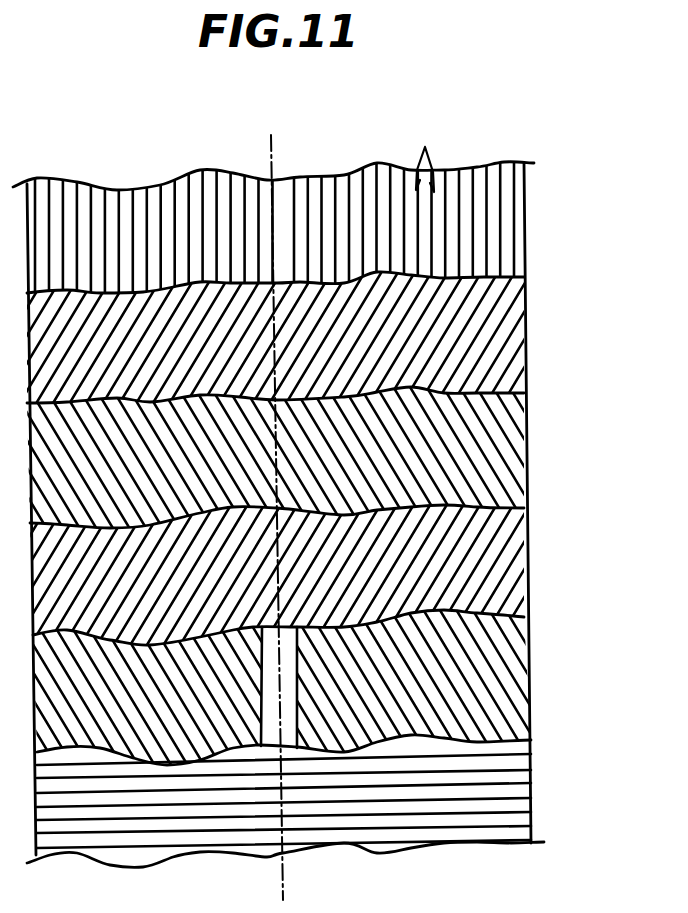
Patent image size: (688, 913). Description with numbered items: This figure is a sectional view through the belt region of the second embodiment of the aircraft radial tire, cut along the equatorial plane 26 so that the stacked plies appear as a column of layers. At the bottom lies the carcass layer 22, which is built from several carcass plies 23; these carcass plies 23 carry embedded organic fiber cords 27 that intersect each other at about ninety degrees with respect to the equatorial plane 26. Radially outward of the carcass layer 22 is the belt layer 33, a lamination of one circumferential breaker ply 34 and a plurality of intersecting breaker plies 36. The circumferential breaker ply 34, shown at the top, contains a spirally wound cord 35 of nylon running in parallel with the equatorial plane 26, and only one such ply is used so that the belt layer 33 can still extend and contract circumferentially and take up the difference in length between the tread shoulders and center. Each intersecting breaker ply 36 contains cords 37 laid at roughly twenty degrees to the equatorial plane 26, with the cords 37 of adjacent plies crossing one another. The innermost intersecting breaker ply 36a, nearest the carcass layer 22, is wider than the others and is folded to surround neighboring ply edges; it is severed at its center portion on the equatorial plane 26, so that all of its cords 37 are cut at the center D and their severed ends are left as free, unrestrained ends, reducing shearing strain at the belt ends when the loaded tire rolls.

The carcass layer 22 is at (531, 763).
The carcass ply 23 is at (514, 803).
The equatorial plane 26 is at (272, 172).
The cords 27 is at (464, 797).
The belt layer 33 is at (524, 333).
The circumferential breaker ply 34 is at (507, 212).
The spirally wound cord 35 is at (428, 158).
The intersecting breaker ply 36 is at (505, 355).
The innermost intersecting breaker ply 36a is at (511, 693).
The cords 37 is at (508, 300).
The center D is at (270, 730).